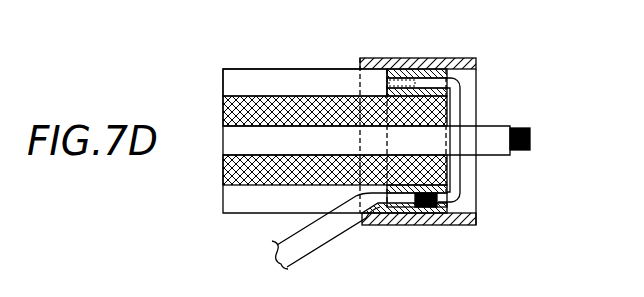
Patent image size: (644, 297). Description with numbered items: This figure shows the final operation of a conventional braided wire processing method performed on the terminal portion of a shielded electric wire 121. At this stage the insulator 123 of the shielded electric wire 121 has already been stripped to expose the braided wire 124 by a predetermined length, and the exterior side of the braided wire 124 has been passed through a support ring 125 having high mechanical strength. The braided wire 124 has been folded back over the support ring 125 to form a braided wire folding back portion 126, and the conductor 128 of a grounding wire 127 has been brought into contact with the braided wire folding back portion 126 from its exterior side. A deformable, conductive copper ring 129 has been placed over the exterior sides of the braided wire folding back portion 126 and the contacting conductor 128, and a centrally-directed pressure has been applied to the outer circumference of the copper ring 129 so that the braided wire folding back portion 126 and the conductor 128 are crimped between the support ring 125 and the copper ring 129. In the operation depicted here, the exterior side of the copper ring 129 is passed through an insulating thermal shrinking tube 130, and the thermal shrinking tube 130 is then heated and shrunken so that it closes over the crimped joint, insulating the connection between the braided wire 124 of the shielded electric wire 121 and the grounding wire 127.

The shielded electric wire 121 is at (249, 62).
The insulator 123 is at (314, 69).
The braided wire 124 is at (230, 186).
The support ring 125 is at (461, 89).
The braided wire folding back portion 126 is at (462, 176).
The grounding wire 127 is at (338, 234).
The conductor 128 is at (427, 207).
The copper ring 129 is at (448, 73).
The thermal shrinking tube 130 is at (420, 58).